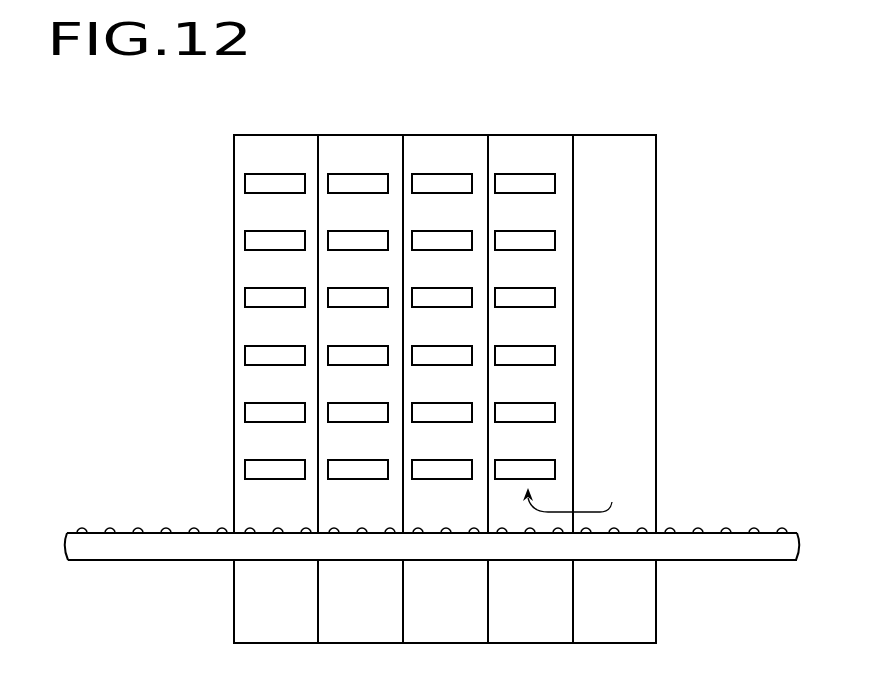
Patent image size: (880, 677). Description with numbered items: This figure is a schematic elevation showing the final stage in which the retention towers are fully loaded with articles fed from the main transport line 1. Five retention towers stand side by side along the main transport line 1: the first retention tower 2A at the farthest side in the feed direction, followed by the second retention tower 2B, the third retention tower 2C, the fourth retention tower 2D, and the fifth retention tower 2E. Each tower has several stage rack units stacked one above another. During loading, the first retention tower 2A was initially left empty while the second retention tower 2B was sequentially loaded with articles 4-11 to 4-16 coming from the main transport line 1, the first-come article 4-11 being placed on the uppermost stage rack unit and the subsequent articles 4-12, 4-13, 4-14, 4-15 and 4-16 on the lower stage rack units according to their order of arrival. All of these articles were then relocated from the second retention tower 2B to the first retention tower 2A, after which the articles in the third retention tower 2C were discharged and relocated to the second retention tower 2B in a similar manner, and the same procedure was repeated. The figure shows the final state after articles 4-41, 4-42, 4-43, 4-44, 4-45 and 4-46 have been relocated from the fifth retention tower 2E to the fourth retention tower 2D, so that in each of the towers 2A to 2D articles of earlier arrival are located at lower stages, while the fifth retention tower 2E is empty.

The main transport line 1 is at (740, 548).
The first retention tower 2A is at (274, 135).
The second retention tower 2B is at (359, 135).
The third retention tower 2C is at (431, 135).
The fourth retention tower 2D is at (525, 135).
The fifth retention tower 2E is at (607, 135).
The article 4-11 is at (245, 469).
The article 4-12 is at (245, 413).
The article 4-13 is at (245, 355).
The article 4-14 is at (245, 298).
The article 4-15 is at (245, 241).
The article 4-16 is at (245, 184).
The article 4-41 is at (555, 473).
The article 4-42 is at (555, 414).
The article 4-43 is at (555, 355).
The article 4-44 is at (555, 297).
The article 4-45 is at (555, 245).
The article 4-46 is at (555, 185).